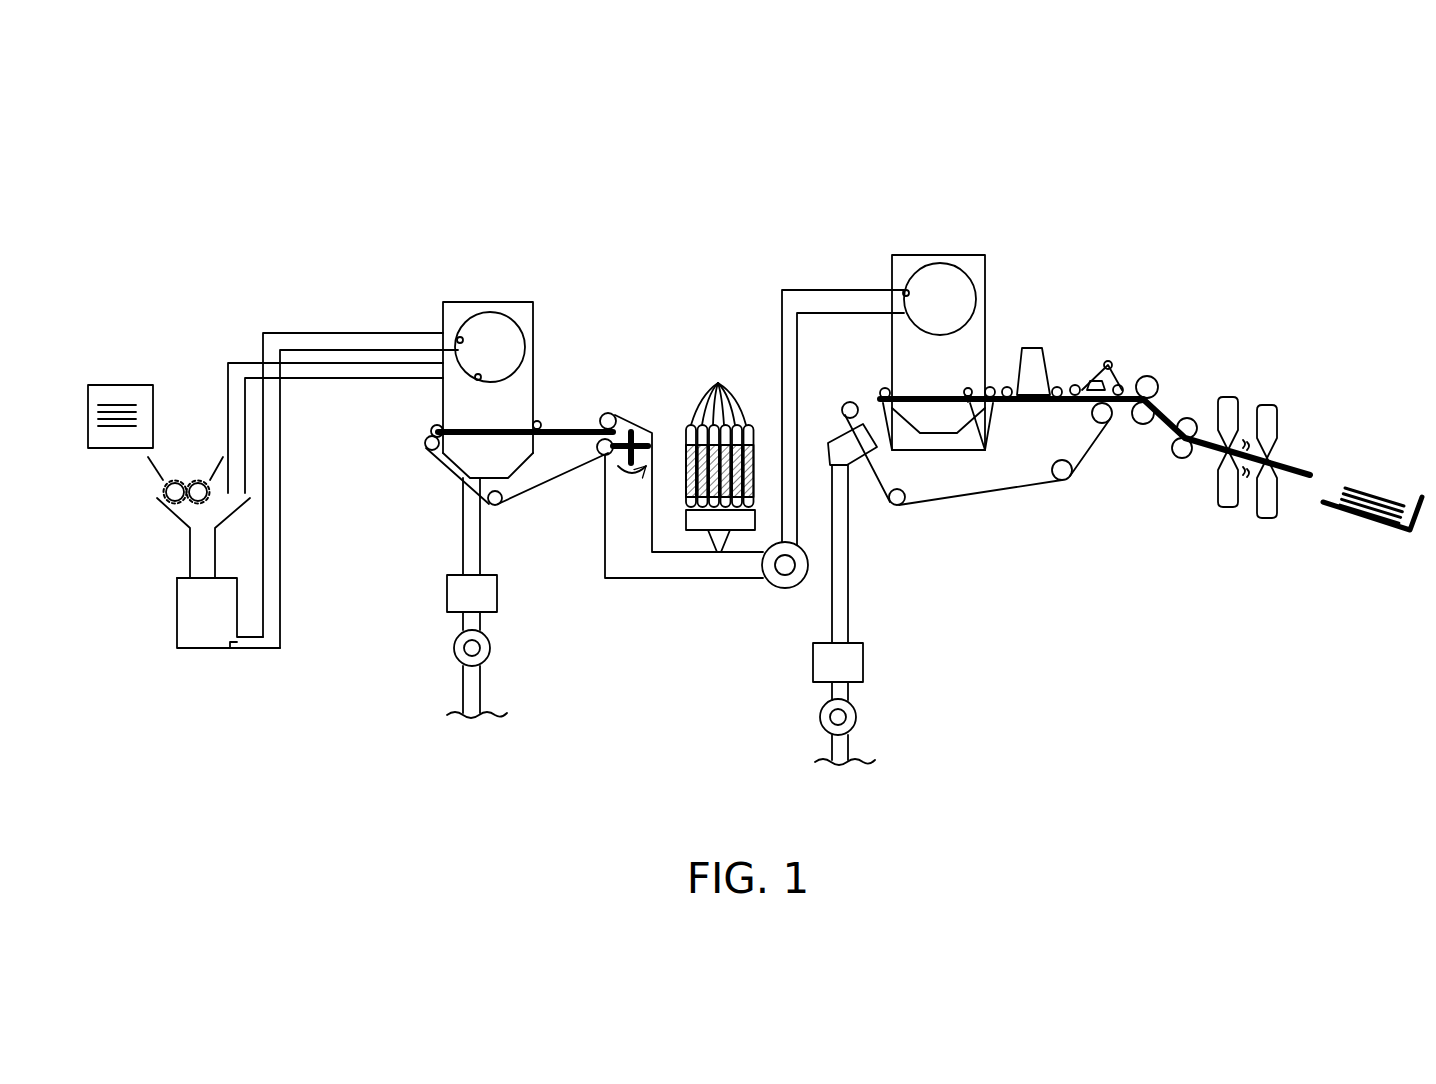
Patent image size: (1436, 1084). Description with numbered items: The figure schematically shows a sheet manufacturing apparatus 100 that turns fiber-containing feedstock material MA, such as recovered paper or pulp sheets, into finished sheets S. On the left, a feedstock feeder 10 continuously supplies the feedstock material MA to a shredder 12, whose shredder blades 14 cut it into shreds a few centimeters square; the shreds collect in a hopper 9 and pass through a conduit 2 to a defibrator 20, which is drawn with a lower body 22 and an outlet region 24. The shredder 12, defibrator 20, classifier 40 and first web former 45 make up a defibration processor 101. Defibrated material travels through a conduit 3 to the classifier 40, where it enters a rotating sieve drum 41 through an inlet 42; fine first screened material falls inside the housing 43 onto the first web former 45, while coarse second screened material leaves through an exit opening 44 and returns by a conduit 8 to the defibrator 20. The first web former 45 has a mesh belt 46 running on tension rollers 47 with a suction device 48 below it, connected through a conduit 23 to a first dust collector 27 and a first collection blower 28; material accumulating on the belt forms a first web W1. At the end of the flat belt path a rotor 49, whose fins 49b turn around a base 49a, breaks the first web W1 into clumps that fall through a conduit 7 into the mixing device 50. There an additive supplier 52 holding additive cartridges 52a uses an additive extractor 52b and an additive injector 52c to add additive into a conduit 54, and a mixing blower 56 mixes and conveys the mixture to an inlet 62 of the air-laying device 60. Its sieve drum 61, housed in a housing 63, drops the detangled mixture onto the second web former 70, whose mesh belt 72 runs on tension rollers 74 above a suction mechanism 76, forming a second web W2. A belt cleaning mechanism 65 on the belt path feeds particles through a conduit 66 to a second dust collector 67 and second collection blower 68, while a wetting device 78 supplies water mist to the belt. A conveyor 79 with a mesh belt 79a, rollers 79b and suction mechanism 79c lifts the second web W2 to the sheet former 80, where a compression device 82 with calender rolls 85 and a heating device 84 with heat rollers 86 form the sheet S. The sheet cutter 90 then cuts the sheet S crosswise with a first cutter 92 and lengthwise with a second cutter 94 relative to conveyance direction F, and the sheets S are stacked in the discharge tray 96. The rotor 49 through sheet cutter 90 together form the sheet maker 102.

The sheet manufacturing apparatus 100 is at (700, 164).
The defibration processor 101 is at (302, 207).
The sheet maker 102 is at (1105, 195).
The feedstock material MA is at (112, 405).
The feedstock feeder 10 is at (146, 385).
The shredder 12 is at (143, 487).
The shredder blades 14 is at (195, 503).
The hopper 9 is at (185, 518).
The conduit 2 is at (190, 567).
The defibrator 20 is at (200, 655).
The defibrating unit housing 22 is at (205, 582).
The discharge port 24 is at (233, 650).
The conduit 3 is at (280, 637).
The conduit 8 is at (234, 362).
The classifier 40 is at (494, 370).
The drum 41 is at (470, 313).
The inlet 42 is at (457, 338).
The housing 43 is at (520, 302).
The exit opening 44 is at (475, 378).
The first web former 45 is at (467, 482).
The mesh belt 46 is at (462, 480).
The tension rollers 47 is at (426, 443).
The suction device 48 is at (520, 463).
The rotor 49 is at (617, 376).
The base 49a is at (632, 437).
The fins 49b is at (612, 440).
The first web W1 is at (458, 427).
The conduit 23 is at (463, 540).
The first dust collector 27 is at (447, 592).
The first collection blower 28 is at (455, 646).
The mixing device 50 is at (754, 463).
The additive supplier 52 is at (702, 436).
The additive cartridges 52a is at (718, 390).
The additive extractor 52b is at (688, 520).
The additive injector 52c is at (710, 540).
The conduit 54 is at (745, 566).
The mixing blower 56 is at (787, 590).
The conduit 7 is at (633, 568).
The air-laying device 60 is at (948, 324).
The drum 61 is at (912, 270).
The inlet 62 is at (904, 291).
The housing 63 is at (980, 255).
The second web former 70 is at (1054, 493).
The mesh belt 72 is at (868, 398).
The tension rollers 74 is at (848, 403).
The suction mechanism 76 is at (958, 437).
The second web W2 is at (985, 405).
The belt cleaning mechanism 65 is at (838, 442).
The conduit 66 is at (848, 610).
The second dust collector 67 is at (863, 660).
The second collection blower 68 is at (856, 718).
The wetting device 78 is at (1028, 348).
The conveyor 79 is at (1120, 306).
The mesh belt 79a is at (1084, 385).
The rollers 79b is at (1150, 316).
The suction mechanism 79c is at (1098, 378).
The sheet former 80 is at (1200, 400).
The compression device 82 is at (1173, 390).
The heating device 84 is at (1190, 427).
The calender rolls 85 is at (1135, 400).
The heat rollers 86 is at (1168, 438).
The sheet cutter 90 is at (1220, 527).
The first cutter 92 is at (1212, 497).
The second cutter 94 is at (1248, 512).
The discharge tray 96 is at (1415, 495).
The sheet S is at (1382, 493).
The conveyance direction F is at (1343, 462).